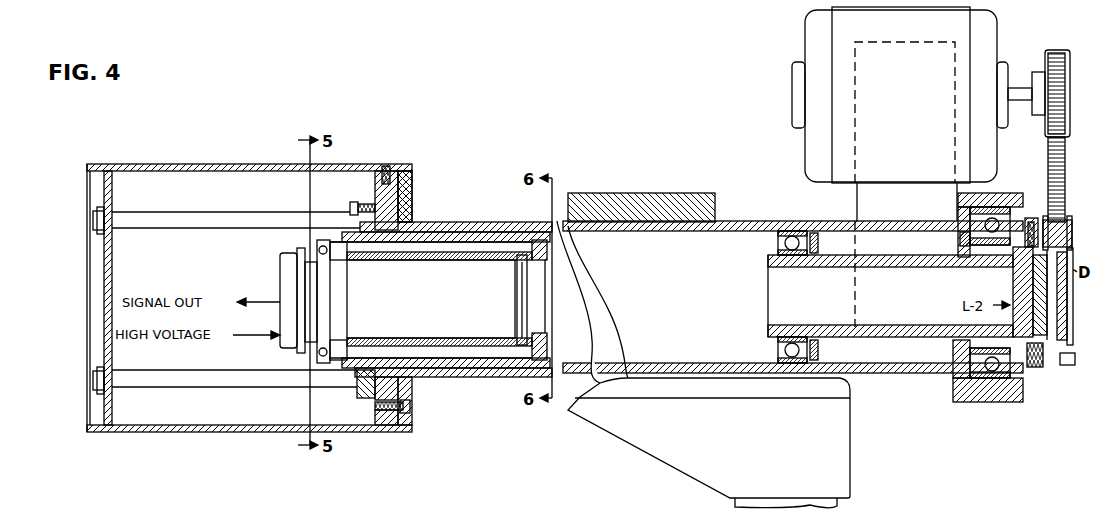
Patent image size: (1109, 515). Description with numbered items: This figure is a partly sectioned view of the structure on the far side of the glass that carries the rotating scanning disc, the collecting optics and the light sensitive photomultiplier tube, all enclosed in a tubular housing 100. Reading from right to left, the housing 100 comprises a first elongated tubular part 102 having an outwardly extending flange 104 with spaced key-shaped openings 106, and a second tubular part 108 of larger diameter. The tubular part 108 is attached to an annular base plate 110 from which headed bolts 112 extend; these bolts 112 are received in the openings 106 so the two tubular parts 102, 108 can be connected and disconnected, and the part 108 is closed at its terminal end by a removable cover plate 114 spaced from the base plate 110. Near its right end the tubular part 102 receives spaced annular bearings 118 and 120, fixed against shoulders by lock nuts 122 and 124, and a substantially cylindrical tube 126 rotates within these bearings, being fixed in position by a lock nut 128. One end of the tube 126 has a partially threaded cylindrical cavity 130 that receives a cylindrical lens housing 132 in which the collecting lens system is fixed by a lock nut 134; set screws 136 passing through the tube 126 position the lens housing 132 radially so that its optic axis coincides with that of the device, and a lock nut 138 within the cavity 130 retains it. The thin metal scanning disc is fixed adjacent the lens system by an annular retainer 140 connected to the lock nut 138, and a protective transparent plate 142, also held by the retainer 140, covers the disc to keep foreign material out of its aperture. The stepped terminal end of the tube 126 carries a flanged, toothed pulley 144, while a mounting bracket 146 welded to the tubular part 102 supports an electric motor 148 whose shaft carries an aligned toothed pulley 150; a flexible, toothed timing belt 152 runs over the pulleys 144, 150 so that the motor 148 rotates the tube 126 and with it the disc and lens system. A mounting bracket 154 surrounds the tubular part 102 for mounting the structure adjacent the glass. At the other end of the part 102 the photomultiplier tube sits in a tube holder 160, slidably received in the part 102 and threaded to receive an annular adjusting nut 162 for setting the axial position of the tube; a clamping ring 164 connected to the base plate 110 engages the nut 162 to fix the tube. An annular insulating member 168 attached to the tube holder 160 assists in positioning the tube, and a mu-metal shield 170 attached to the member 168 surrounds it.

The tubular housing 100 is at (413, 178).
The first elongated tubular part 102 is at (709, 443).
The outwardly extending flange 104 is at (413, 192).
The key-shaped openings 106 is at (411, 407).
The second tubular part 108 is at (178, 166).
The annular base plate 110 is at (372, 178).
The headed bolts 112 is at (400, 418).
The removable cover plate 114 is at (102, 405).
The annular bearing 118 is at (962, 228).
The annular bearing 120 is at (788, 231).
The lock nut 122 is at (1008, 215).
The lock nut 124 is at (818, 238).
The cylindrical tube 126 is at (884, 262).
The lock nut 128 is at (960, 239).
The cylindrical cavity 130 is at (1030, 388).
The cylindrical lens housing 132 is at (1020, 268).
The lock nut 134 is at (1043, 317).
The set screws 136 is at (1033, 222).
The lock nut 138 is at (1040, 370).
The annular retainer 140 is at (1072, 366).
The protective transparent plate 142 is at (1060, 287).
The flanged toothed pulley 144 is at (1062, 224).
The mounting bracket 146 is at (856, 205).
The electric motor 148 is at (807, 150).
The flanged toothed pulley 150 is at (1047, 68).
The flexible toothed timing belt 152 is at (1048, 163).
The mounting bracket 154 is at (620, 193).
The tube holder 160 is at (470, 232).
The annular adjusting nut 162 is at (372, 360).
The clamping ring 164 is at (362, 400).
The annular member 168 is at (547, 334).
The shield 170 is at (436, 262).